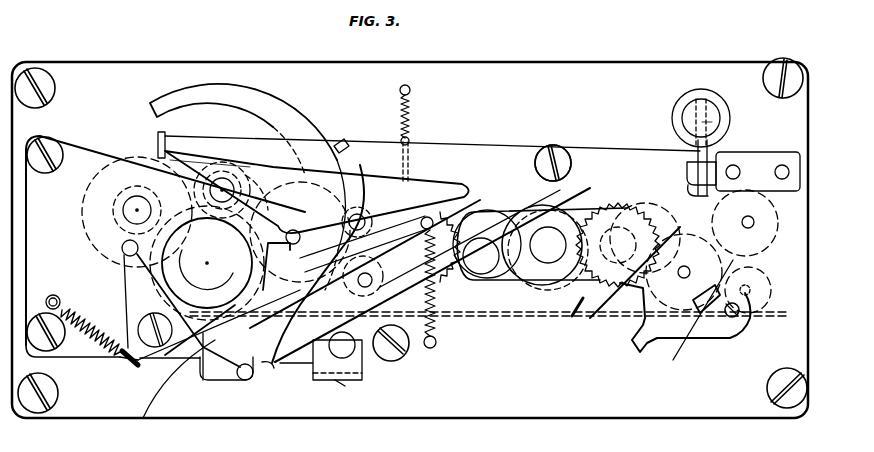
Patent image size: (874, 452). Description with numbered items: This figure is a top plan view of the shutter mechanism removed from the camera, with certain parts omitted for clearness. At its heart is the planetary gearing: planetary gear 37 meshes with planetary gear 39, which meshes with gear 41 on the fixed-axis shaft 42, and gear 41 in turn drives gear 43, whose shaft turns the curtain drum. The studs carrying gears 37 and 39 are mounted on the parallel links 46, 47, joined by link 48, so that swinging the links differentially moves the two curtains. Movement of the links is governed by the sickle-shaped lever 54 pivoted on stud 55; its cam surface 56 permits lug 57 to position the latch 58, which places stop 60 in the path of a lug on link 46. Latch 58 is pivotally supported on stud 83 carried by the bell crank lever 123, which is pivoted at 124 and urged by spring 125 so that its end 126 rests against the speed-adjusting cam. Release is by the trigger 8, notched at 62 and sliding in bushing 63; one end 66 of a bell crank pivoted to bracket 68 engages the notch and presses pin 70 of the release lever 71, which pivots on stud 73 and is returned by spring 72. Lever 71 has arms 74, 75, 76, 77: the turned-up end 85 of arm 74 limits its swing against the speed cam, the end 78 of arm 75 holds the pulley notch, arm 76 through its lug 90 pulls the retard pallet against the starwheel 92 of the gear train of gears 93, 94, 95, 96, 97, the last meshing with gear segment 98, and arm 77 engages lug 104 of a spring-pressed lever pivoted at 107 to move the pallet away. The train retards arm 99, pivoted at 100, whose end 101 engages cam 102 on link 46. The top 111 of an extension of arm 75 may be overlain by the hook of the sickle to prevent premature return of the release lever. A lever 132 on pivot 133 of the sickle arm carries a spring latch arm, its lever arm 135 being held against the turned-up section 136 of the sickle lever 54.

The trigger 8 is at (697, 99).
The planetary gear 37 is at (352, 243).
The planetary gear 39 is at (213, 160).
The gear 41 is at (90, 240).
The fixed-axis shaft 42 is at (123, 207).
The gear 43 is at (207, 263).
The parallel link 46 is at (243, 385).
The parallel link 47 is at (168, 186).
The link 48 is at (250, 192).
The sickle-shaped lever 54 is at (302, 112).
The stud 55 is at (363, 376).
The cam surface 56 is at (276, 91).
The lug 57 is at (349, 150).
The latch 58 is at (363, 194).
The stop 60 is at (313, 199).
The notch 62 is at (706, 102).
The bushing 63 is at (672, 117).
The end of bell crank lever 66 is at (715, 118).
The bracket 68 is at (776, 152).
The pin 70 is at (720, 160).
The release lever 71 is at (471, 148).
The spring 72 is at (416, 100).
The stud 73 is at (556, 150).
The arm 74 is at (337, 150).
The arm 75 is at (437, 208).
The arm 76 is at (592, 312).
The arm 77 is at (760, 264).
The end of arm 78 is at (255, 308).
The stud 83 is at (366, 219).
The turned-up end 85 is at (158, 132).
The lug 90 is at (588, 300).
The starwheel 92 is at (651, 215).
The gear 93 is at (621, 215).
The gear 94 is at (546, 292).
The gear 95 is at (521, 278).
The gear 96 is at (505, 300).
The gear 97 is at (482, 300).
The gear segment 98 is at (468, 278).
The arm 99 is at (365, 244).
The pivot 100 is at (372, 288).
The end pin 101 is at (249, 380).
The cam 102 is at (208, 383).
The lug 104 is at (702, 340).
The pivot 107 is at (735, 320).
The top of arm 111 is at (281, 260).
The bell crank lever 123 is at (148, 368).
The pivot 124 is at (138, 324).
The spring 125 is at (66, 310).
The lever end 126 is at (123, 255).
The lever 132 is at (179, 379).
The pivot 133 is at (273, 366).
The lever arm 135 is at (322, 380).
The turned-up section 136 is at (345, 386).